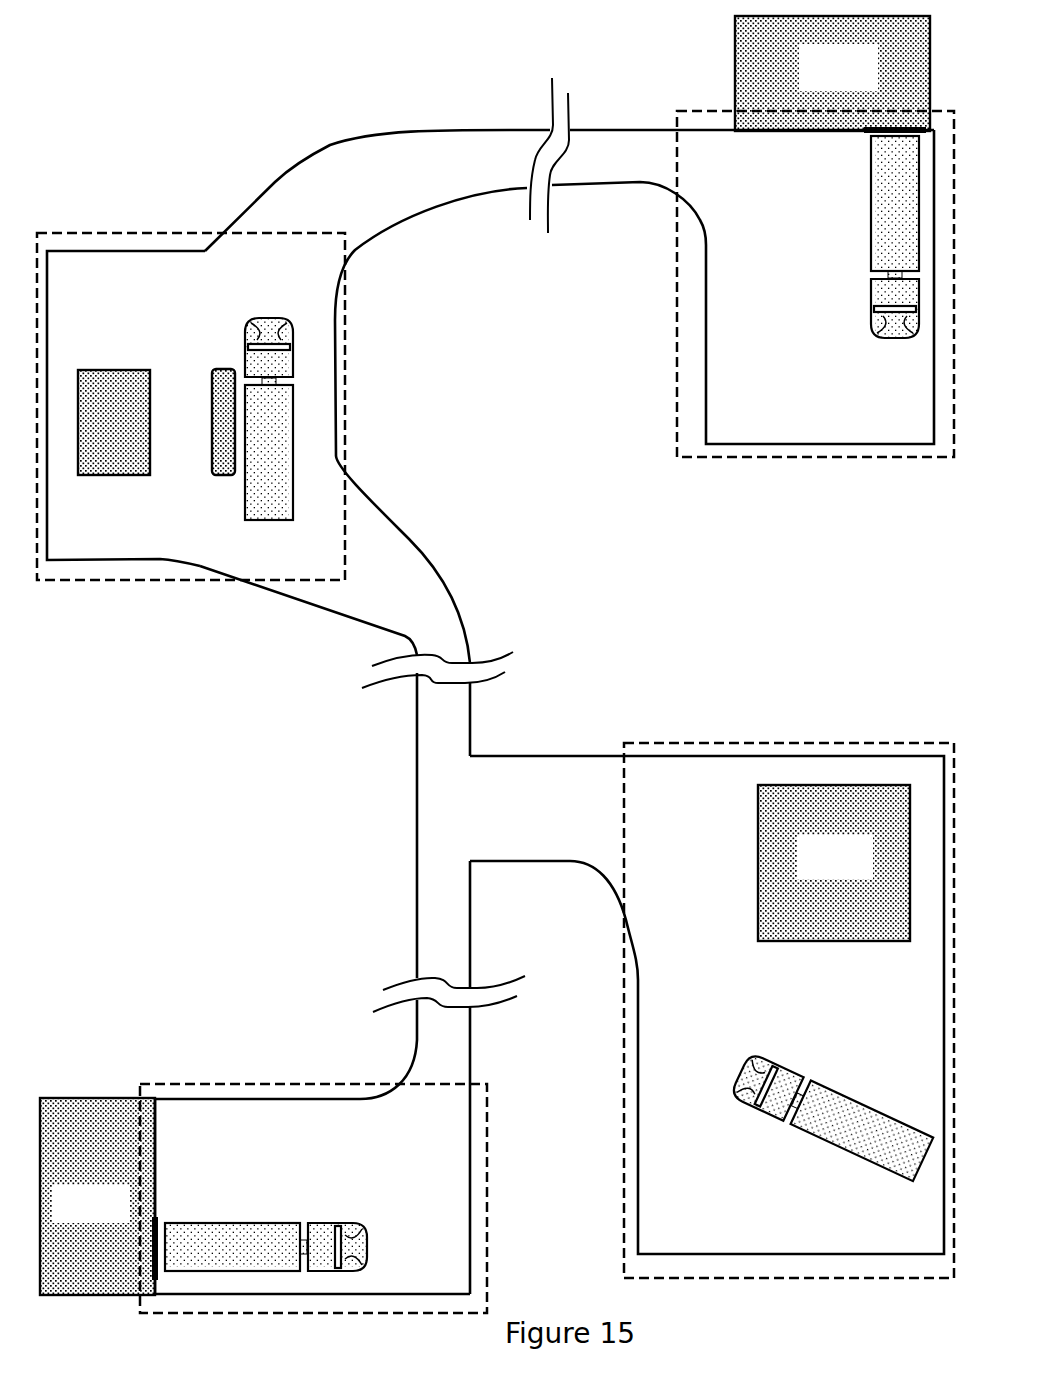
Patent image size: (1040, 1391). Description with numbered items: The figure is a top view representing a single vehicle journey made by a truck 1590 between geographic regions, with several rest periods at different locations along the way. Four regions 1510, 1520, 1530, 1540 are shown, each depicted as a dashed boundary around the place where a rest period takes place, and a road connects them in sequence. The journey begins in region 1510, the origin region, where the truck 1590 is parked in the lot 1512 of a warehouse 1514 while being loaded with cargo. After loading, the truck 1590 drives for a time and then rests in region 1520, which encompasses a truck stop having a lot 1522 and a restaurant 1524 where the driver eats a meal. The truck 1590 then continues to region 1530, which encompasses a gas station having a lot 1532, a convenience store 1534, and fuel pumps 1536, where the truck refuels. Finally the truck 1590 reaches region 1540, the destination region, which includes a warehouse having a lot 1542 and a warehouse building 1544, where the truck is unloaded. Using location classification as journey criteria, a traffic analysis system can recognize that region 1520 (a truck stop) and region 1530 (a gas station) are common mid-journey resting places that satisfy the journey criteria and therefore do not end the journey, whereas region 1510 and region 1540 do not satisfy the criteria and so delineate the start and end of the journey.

The region 1510 is at (200, 1082).
The lot 1512 is at (291, 1154).
The warehouse 1514 is at (111, 1217).
The region 1520 is at (690, 742).
The lot 1522 is at (883, 1036).
The restaurant 1524 is at (858, 868).
The region 1530 is at (73, 233).
The lot 1532 is at (178, 324).
The convenience store 1534 is at (130, 477).
The fuel pumps 1536 is at (227, 477).
The region 1540 is at (888, 460).
The lot 1542 is at (819, 365).
The warehouse building 1544 is at (861, 81).
The truck 1590 is at (288, 435).